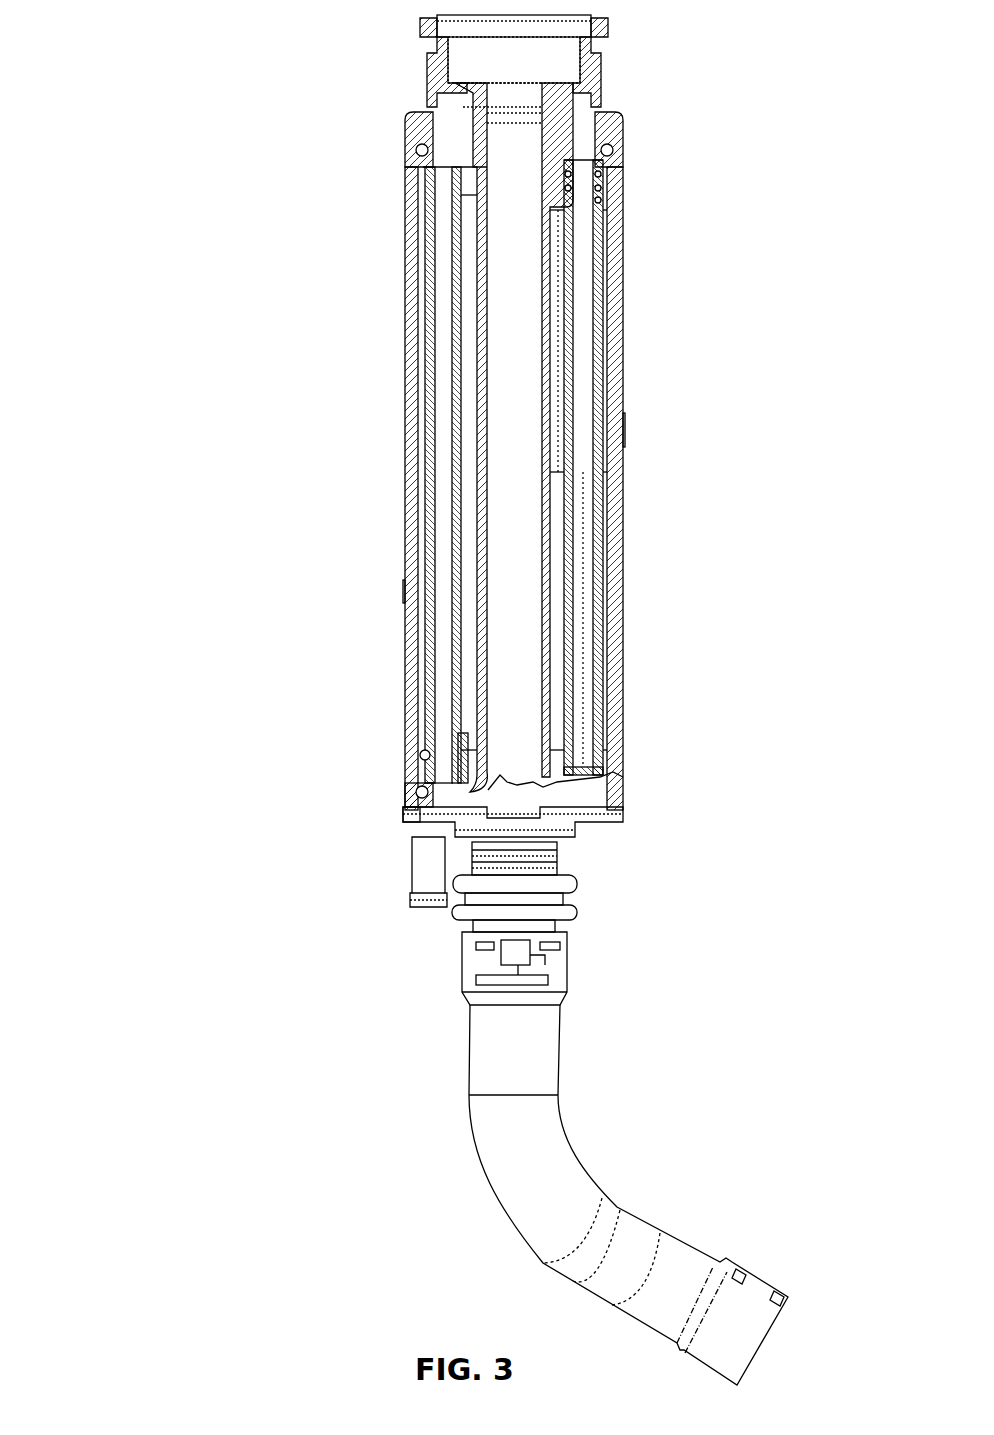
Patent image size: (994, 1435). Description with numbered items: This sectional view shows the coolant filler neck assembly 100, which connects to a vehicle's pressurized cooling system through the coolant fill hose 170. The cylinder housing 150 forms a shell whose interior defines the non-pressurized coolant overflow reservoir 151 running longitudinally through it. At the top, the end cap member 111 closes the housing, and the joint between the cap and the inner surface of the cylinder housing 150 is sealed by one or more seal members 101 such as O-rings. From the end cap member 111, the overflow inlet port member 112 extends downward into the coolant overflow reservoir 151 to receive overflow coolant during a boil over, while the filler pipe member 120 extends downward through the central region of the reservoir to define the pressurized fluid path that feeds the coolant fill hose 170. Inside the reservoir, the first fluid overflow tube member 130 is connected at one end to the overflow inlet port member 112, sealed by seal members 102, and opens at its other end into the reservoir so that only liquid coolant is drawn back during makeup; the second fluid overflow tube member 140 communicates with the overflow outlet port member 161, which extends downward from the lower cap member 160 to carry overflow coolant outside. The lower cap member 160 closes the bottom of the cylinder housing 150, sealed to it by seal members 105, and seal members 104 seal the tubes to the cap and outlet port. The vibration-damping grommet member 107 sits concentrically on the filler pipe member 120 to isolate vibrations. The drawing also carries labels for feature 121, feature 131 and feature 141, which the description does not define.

The coolant filler neck assembly 100 is at (160, 110).
The seal members 101 is at (420, 158).
The seal members 102 is at (598, 175).
The seal members 104 is at (425, 752).
The seal members 105 is at (407, 815).
The vibration-damping grommet member 107 is at (567, 908).
The end cap member 111 is at (430, 62).
The overflow inlet port member 112 is at (590, 107).
The filler pipe member 120 is at (490, 150).
The inner tube lower end 121 is at (497, 668).
The first fluid overflow tube member 130 is at (598, 252).
The intermediate tube lower portion 131 is at (590, 617).
The second fluid overflow tube member 140 is at (437, 458).
The housing sleeve 141 is at (442, 263).
The cylinder housing 150 is at (615, 527).
The coolant overflow reservoir 151 is at (558, 318).
The lower cap member 160 is at (607, 818).
The overflow outlet port member 161 is at (425, 867).
The coolant fill hose 170 is at (494, 1157).